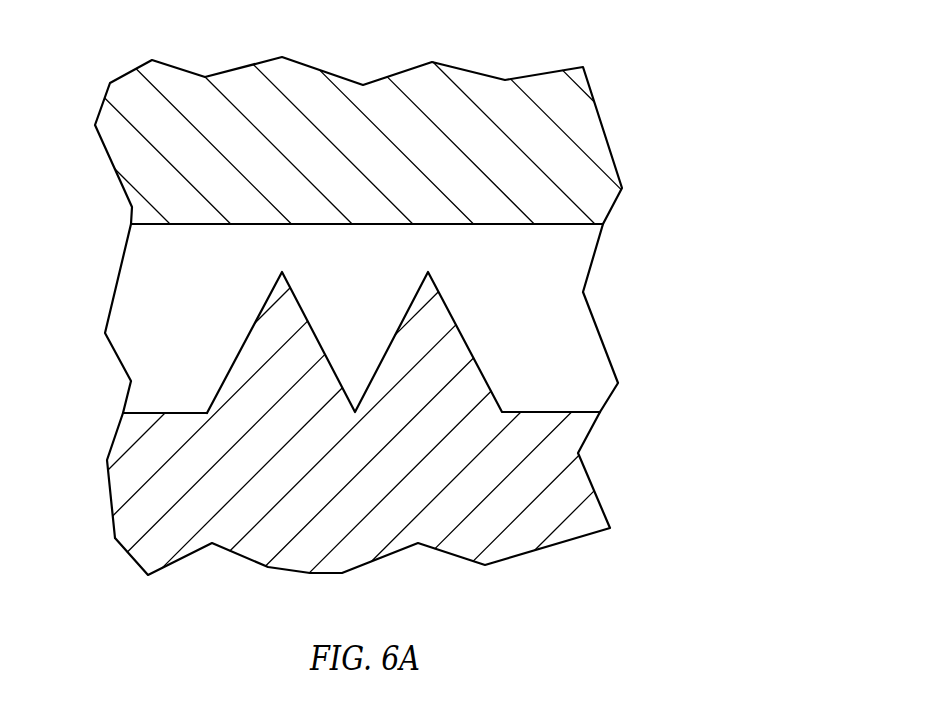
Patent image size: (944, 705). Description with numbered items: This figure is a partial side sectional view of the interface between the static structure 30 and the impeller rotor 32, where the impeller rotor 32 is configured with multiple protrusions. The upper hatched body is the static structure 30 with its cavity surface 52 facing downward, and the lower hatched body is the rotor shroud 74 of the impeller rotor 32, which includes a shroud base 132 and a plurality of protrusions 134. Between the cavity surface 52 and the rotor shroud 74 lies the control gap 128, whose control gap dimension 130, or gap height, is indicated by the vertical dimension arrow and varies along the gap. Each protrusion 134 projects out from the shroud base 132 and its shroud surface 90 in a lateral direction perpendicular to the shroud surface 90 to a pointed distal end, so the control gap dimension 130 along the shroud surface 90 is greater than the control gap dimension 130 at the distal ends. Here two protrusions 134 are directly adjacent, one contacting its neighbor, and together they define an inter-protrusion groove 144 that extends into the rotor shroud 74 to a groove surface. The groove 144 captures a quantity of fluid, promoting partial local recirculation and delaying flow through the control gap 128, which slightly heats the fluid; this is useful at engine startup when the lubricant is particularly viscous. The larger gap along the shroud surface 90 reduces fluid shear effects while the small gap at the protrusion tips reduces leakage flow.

The static structure 30 is at (582, 66).
The impeller rotor 32 is at (317, 448).
The rotor shroud 74 is at (317, 448).
The cavity surface 52 is at (147, 226).
The shroud surface 90 is at (142, 411).
The control gap 128 is at (114, 319).
The control gap dimension 130 is at (556, 224).
The shroud base 132 is at (110, 498).
The protrusion 134 is at (240, 306).
The inter-protrusion groove 144 is at (336, 300).